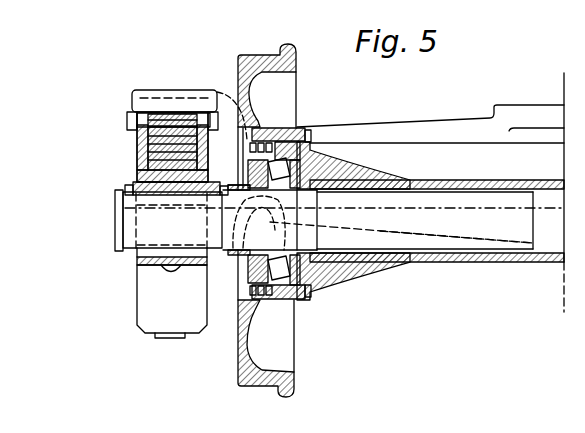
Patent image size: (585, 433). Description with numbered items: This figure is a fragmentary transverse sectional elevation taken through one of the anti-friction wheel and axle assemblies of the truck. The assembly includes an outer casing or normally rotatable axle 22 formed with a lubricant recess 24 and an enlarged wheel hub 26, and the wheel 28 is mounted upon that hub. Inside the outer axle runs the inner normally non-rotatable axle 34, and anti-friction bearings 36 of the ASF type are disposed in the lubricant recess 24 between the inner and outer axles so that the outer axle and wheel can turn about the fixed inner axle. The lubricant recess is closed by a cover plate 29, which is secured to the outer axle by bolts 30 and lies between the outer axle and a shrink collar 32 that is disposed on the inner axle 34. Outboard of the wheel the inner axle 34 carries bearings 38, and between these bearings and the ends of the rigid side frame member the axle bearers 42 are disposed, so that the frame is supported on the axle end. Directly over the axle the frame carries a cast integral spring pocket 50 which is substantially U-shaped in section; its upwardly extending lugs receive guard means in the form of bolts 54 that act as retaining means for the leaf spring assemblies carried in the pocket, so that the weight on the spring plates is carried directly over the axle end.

The outer casing or normally rotatable axle 22 is at (420, 262).
The lubricant recess 24 is at (312, 262).
The enlarged wheel hub 26 is at (300, 317).
The wheel 28 is at (287, 94).
The cover plate 29 is at (240, 290).
The bolts 30 is at (254, 282).
The shrink collar 32 is at (233, 200).
The inner normally non-rotatable axle 34 is at (477, 244).
The anti-friction bearings 36 is at (316, 156).
The bearings 38 is at (131, 238).
The axle bearers 42 is at (133, 181).
The spring pocket 50 is at (137, 143).
The bolts 54 is at (130, 118).